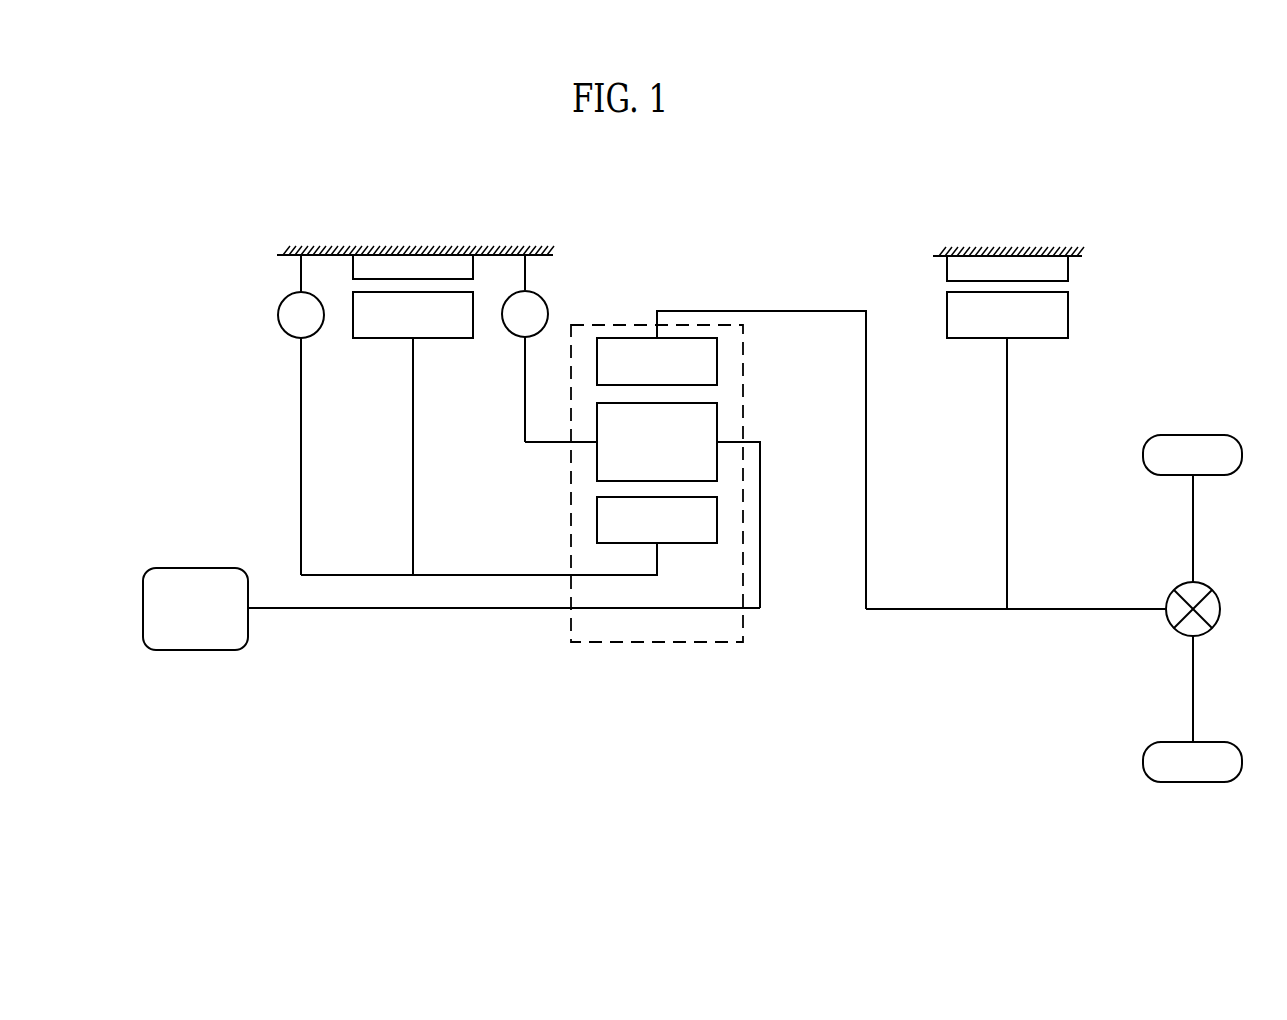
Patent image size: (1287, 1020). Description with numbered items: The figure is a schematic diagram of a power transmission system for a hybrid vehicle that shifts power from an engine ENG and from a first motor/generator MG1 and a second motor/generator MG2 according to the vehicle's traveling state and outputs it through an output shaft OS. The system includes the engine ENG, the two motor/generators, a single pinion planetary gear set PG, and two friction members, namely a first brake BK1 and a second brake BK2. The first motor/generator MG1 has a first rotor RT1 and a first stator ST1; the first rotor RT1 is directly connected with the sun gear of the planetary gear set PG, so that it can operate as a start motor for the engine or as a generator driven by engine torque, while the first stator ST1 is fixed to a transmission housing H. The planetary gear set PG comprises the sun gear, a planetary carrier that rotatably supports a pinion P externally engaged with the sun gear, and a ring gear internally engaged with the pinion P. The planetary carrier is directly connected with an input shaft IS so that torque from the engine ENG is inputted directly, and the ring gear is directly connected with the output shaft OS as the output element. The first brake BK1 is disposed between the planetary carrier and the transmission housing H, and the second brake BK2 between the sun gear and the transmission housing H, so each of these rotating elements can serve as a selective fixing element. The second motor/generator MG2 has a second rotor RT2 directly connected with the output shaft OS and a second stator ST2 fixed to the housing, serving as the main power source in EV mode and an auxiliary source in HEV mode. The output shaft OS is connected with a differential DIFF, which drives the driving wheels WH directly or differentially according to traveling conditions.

The first motor/generator MG1 is at (469, 176).
The first stator ST1 is at (406, 268).
The first rotor RT1 is at (448, 315).
The transmission housing H is at (344, 250).
The second brake BK2 is at (301, 415).
The first brake BK1 is at (525, 348).
The planetary gear set PG is at (632, 648).
The pinion P is at (657, 442).
The engine ENG is at (195, 609).
The input shaft IS is at (483, 612).
The second motor/generator MG2 is at (1152, 267).
The second stator ST2 is at (1060, 271).
The second rotor RT2 is at (1060, 316).
The output shaft OS is at (955, 612).
The differential DIFF is at (1166, 619).
The driving wheels WH is at (1148, 453).